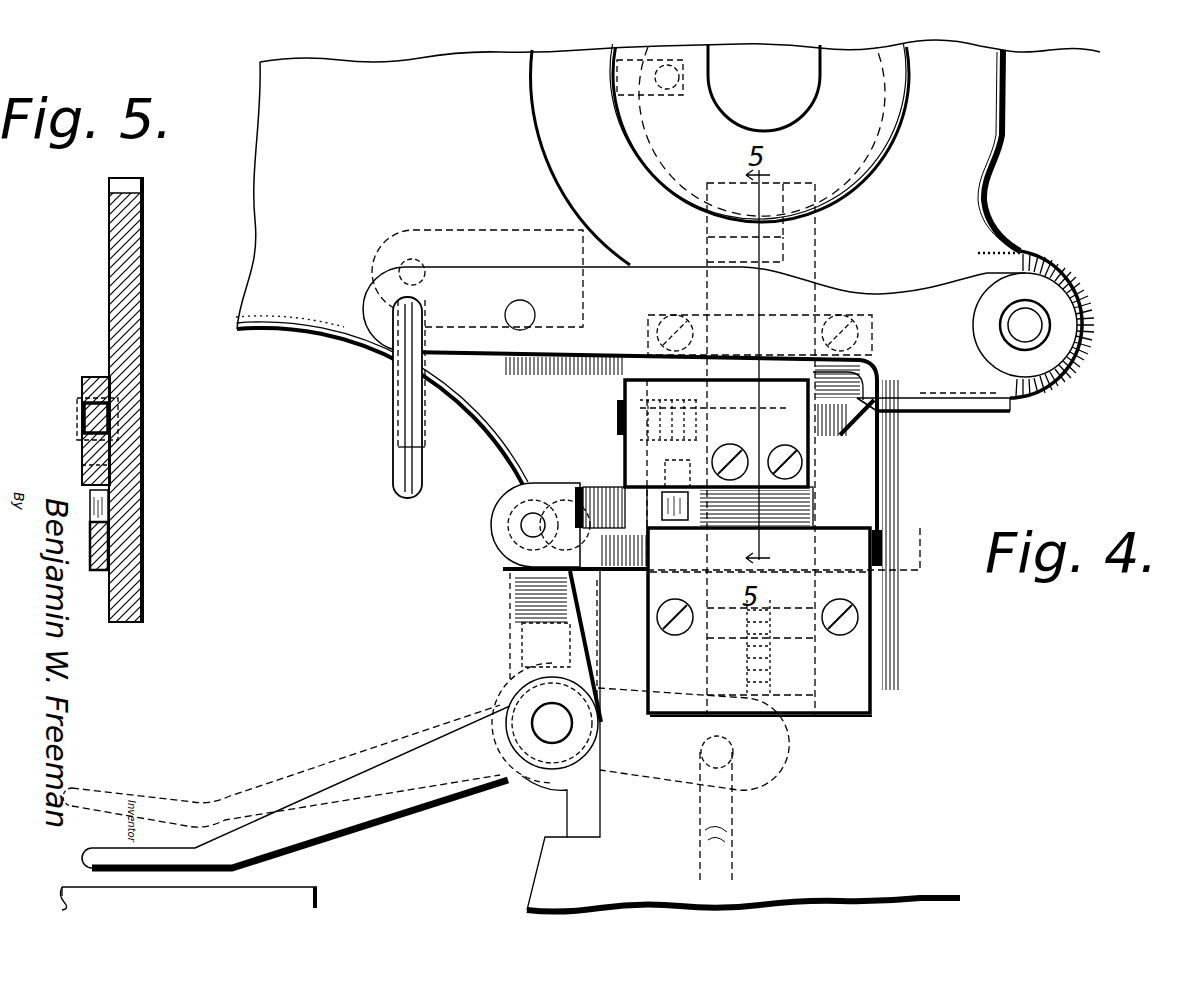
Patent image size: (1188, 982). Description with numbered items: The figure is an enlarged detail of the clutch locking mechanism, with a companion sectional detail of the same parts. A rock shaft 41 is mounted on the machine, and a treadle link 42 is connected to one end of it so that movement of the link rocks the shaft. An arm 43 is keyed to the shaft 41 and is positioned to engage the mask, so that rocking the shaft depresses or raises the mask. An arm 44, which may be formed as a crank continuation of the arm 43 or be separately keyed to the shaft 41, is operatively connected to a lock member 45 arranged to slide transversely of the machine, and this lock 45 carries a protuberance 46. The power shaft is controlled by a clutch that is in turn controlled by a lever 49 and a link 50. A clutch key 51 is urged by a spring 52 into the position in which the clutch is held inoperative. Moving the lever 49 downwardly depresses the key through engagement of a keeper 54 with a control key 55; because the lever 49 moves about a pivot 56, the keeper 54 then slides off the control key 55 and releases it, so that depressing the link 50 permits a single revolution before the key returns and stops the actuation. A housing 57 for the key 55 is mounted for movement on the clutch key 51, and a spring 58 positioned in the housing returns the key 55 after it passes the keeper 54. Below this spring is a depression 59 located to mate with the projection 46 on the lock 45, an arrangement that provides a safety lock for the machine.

In FIG. 4, the rock shaft 41 is at (548, 722).
In FIG. 4, the treadle link 42 is at (727, 805).
In FIG. 4, the arm 43 is at (382, 772).
In FIG. 4, the arm 44 is at (522, 586).
In FIG. 5, the lock member 45 is at (100, 548).
In FIG. 4, the lock member 45 is at (497, 522).
In FIG. 5, the protuberance 46 is at (100, 505).
In FIG. 4, the protuberance 46 is at (668, 500).
In FIG. 4, the lever 49 is at (405, 306).
In FIG. 4, the link 50 is at (410, 402).
In FIG. 5, the clutch key 51 is at (128, 272).
In FIG. 4, the clutch key 51 is at (803, 242).
In FIG. 4, the spring 52 is at (785, 716).
In FIG. 4, the keeper 54 is at (897, 403).
In FIG. 5, the control key 55 is at (82, 411).
In FIG. 4, the control key 55 is at (847, 437).
In FIG. 4, the pivot 56 is at (1046, 318).
In FIG. 5, the housing 57 is at (82, 378).
In FIG. 4, the housing 57 is at (642, 368).
In FIG. 4, the spring 58 is at (625, 416).
In FIG. 5, the depression 59 is at (106, 468).
In FIG. 4, the depression 59 is at (675, 470).